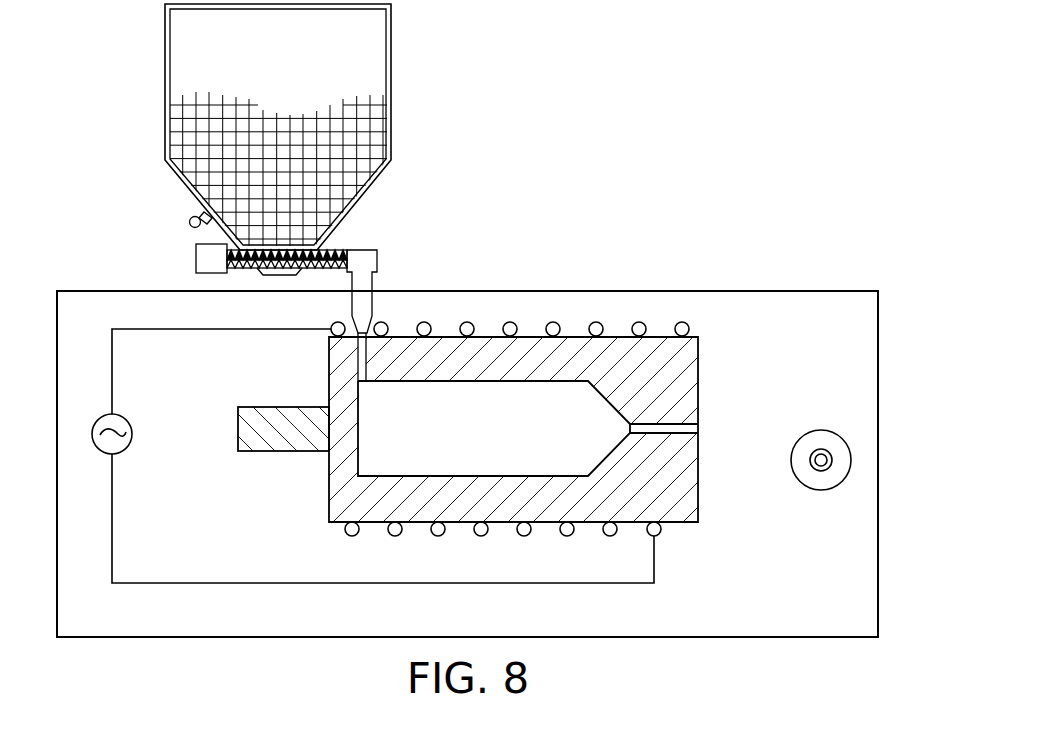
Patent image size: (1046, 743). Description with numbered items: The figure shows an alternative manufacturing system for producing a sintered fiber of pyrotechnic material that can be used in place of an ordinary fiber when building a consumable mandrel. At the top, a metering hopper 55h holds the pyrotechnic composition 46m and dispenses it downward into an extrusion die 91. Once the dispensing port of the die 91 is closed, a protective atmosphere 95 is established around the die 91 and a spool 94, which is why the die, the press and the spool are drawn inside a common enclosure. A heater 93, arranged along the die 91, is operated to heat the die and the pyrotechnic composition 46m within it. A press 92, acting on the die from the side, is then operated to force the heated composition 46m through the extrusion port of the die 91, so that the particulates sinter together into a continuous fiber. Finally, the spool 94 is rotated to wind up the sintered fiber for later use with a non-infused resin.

The metering hopper 55h is at (395, 35).
The pyrotechnic composition 46m is at (338, 165).
The extrusion die 91 is at (687, 497).
The press 92 is at (274, 437).
The heater 93 is at (640, 322).
The spool 94 is at (820, 430).
The protective atmosphere 95 is at (768, 291).